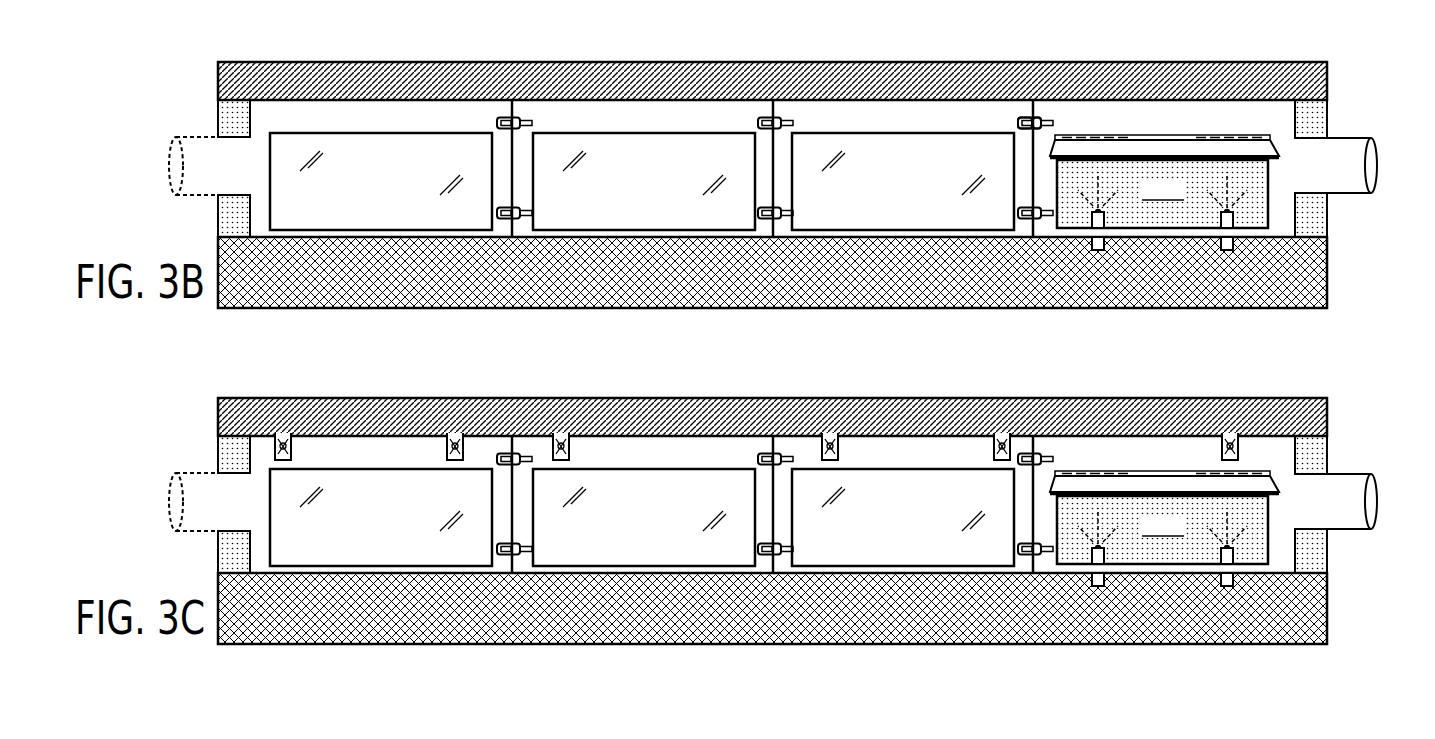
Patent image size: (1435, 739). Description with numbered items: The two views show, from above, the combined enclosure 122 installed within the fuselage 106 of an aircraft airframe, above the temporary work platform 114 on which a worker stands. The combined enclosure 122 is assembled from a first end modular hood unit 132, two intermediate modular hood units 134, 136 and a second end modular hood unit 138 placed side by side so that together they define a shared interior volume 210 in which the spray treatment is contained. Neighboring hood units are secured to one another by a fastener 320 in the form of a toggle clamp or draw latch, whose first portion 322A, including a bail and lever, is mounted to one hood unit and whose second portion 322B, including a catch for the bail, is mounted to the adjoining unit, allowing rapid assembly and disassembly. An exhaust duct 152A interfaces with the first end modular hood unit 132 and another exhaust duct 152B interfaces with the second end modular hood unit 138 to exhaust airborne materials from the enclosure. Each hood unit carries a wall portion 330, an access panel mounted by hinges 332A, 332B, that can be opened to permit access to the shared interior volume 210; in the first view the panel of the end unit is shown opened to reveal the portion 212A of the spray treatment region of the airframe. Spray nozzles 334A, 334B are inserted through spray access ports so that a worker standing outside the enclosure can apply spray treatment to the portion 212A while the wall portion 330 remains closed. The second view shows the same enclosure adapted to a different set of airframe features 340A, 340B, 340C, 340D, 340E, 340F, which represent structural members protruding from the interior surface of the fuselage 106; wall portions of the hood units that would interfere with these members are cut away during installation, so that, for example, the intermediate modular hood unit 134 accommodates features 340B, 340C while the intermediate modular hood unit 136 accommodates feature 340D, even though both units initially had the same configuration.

In FIG. 3B, the fuselage 106 is at (243, 89).
In FIG. 3C, the fuselage 106 is at (745, 485).
In FIG. 3B, the temporary work platform 114 is at (224, 292).
In FIG. 3C, the temporary work platform 114 is at (742, 623).
In FIG. 3B, the combined enclosure 122 is at (1308, 206).
In FIG. 3C, the combined enclosure 122 is at (1337, 504).
In FIG. 3B, the first end modular hood unit 132 is at (1193, 118).
In FIG. 3C, the first end modular hood unit 132 is at (1175, 405).
In FIG. 3B, the intermediate modular hood unit 134 is at (912, 118).
In FIG. 3C, the intermediate modular hood unit 134 is at (954, 465).
In FIG. 3B, the intermediate modular hood unit 136 is at (638, 116).
In FIG. 3C, the intermediate modular hood unit 136 is at (687, 465).
In FIG. 3B, the second end modular hood unit 138 is at (412, 116).
In FIG. 3C, the second end modular hood unit 138 is at (445, 465).
In FIG. 3B, the exhaust duct 152A is at (1345, 148).
In FIG. 3C, the exhaust duct 152A is at (1344, 483).
In FIG. 3B, the exhaust duct 152B is at (197, 150).
In FIG. 3C, the exhaust duct 152B is at (200, 484).
In FIG. 3B, the shared interior volume 210 is at (1203, 127).
In FIG. 3C, the shared interior volume 210 is at (1164, 517).
In FIG. 3B, the portion of spray treatment region 212A is at (1253, 176).
In FIG. 3C, the portion of spray treatment region 212A is at (1162, 530).
In FIG. 3B, the fastener 320 is at (1018, 112).
In FIG. 3C, the fastener 320 is at (775, 504).
In FIG. 3B, the first portion of fastener 322A is at (1043, 112).
In FIG. 3B, the second portion of fastener 322B is at (1027, 114).
In FIG. 3B, the wall portion 330 is at (345, 155).
In FIG. 3C, the wall portion 330 is at (706, 460).
In FIG. 3B, the hinge 332A is at (1243, 136).
In FIG. 3C, the hinge 332A is at (1163, 417).
In FIG. 3B, the hinge 332B is at (1090, 136).
In FIG. 3B, the spray nozzle 334A is at (1225, 222).
In FIG. 3C, the spray nozzle 334A is at (1212, 597).
In FIG. 3B, the spray nozzle 334B is at (1097, 222).
In FIG. 3C, the spray nozzle 334B is at (1084, 597).
In FIG. 3C, the airframe feature 340A is at (1232, 409).
In FIG. 3C, the airframe feature 340B is at (1002, 409).
In FIG. 3C, the airframe feature 340C is at (835, 409).
In FIG. 3C, the airframe feature 340D is at (565, 409).
In FIG. 3C, the airframe feature 340E is at (456, 409).
In FIG. 3C, the airframe feature 340F is at (282, 409).